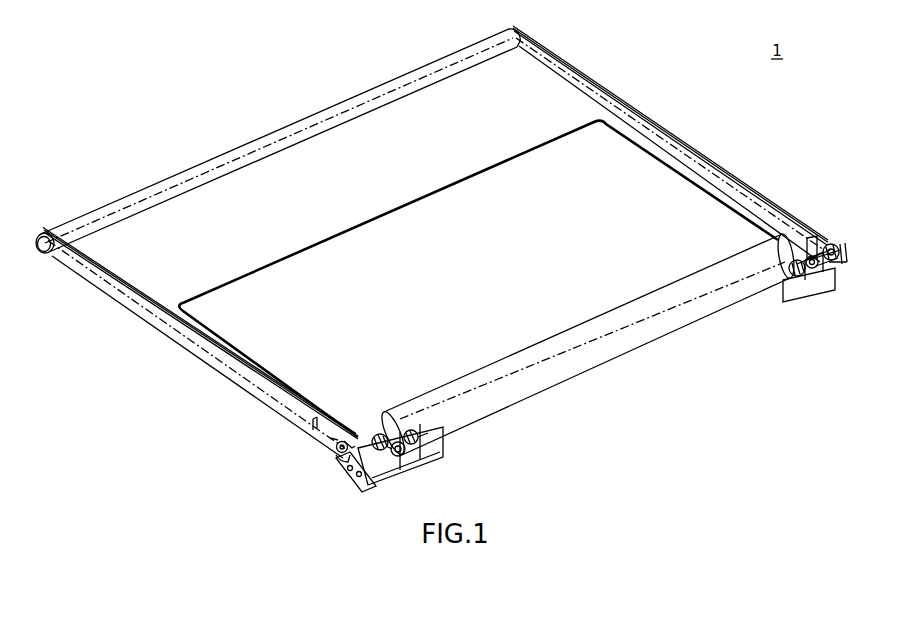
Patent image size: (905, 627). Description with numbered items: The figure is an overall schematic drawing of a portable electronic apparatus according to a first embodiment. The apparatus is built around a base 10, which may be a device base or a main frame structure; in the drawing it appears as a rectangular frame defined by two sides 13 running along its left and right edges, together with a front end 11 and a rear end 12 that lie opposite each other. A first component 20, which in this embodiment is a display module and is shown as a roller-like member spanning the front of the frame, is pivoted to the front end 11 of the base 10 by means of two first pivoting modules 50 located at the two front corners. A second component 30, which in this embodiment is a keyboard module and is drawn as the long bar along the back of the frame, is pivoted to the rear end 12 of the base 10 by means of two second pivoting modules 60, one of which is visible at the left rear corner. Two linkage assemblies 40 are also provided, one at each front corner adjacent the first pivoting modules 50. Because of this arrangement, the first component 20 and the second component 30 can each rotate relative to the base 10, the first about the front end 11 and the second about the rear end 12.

The base 10 is at (429, 242).
The front end 11 is at (367, 487).
The rear end 12 is at (42, 232).
The sides 13 is at (251, 384).
The first component 20 is at (619, 367).
The second component 30 is at (275, 168).
The linkage assembly 40 is at (330, 462).
The first pivoting module 50 is at (429, 466).
The second pivoting module 60 is at (45, 265).